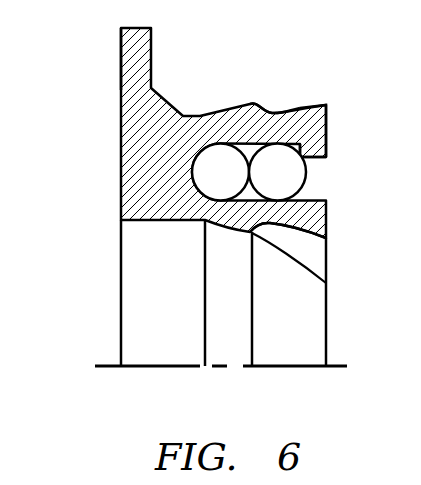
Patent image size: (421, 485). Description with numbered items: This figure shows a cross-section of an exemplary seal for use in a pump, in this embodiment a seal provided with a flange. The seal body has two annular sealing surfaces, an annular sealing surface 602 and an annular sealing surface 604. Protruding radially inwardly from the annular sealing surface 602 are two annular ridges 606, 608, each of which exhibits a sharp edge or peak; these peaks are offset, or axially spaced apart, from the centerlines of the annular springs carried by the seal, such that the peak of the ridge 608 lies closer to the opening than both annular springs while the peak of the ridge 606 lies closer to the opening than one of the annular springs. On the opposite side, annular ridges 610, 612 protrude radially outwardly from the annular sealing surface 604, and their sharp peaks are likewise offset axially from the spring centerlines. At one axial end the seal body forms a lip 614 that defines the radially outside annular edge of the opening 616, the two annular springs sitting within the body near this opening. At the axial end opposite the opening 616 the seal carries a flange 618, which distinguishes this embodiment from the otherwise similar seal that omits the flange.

The annular sealing surface 602 is at (175, 223).
The annular sealing surface 604 is at (203, 115).
The annular ridge 606 is at (326, 283).
The annular ridge 608 is at (327, 240).
The annular ridge 610 is at (255, 103).
The annular ridge 612 is at (326, 104).
The lip 614 is at (327, 157).
The opening 616 is at (317, 181).
The flange 618 is at (120, 70).